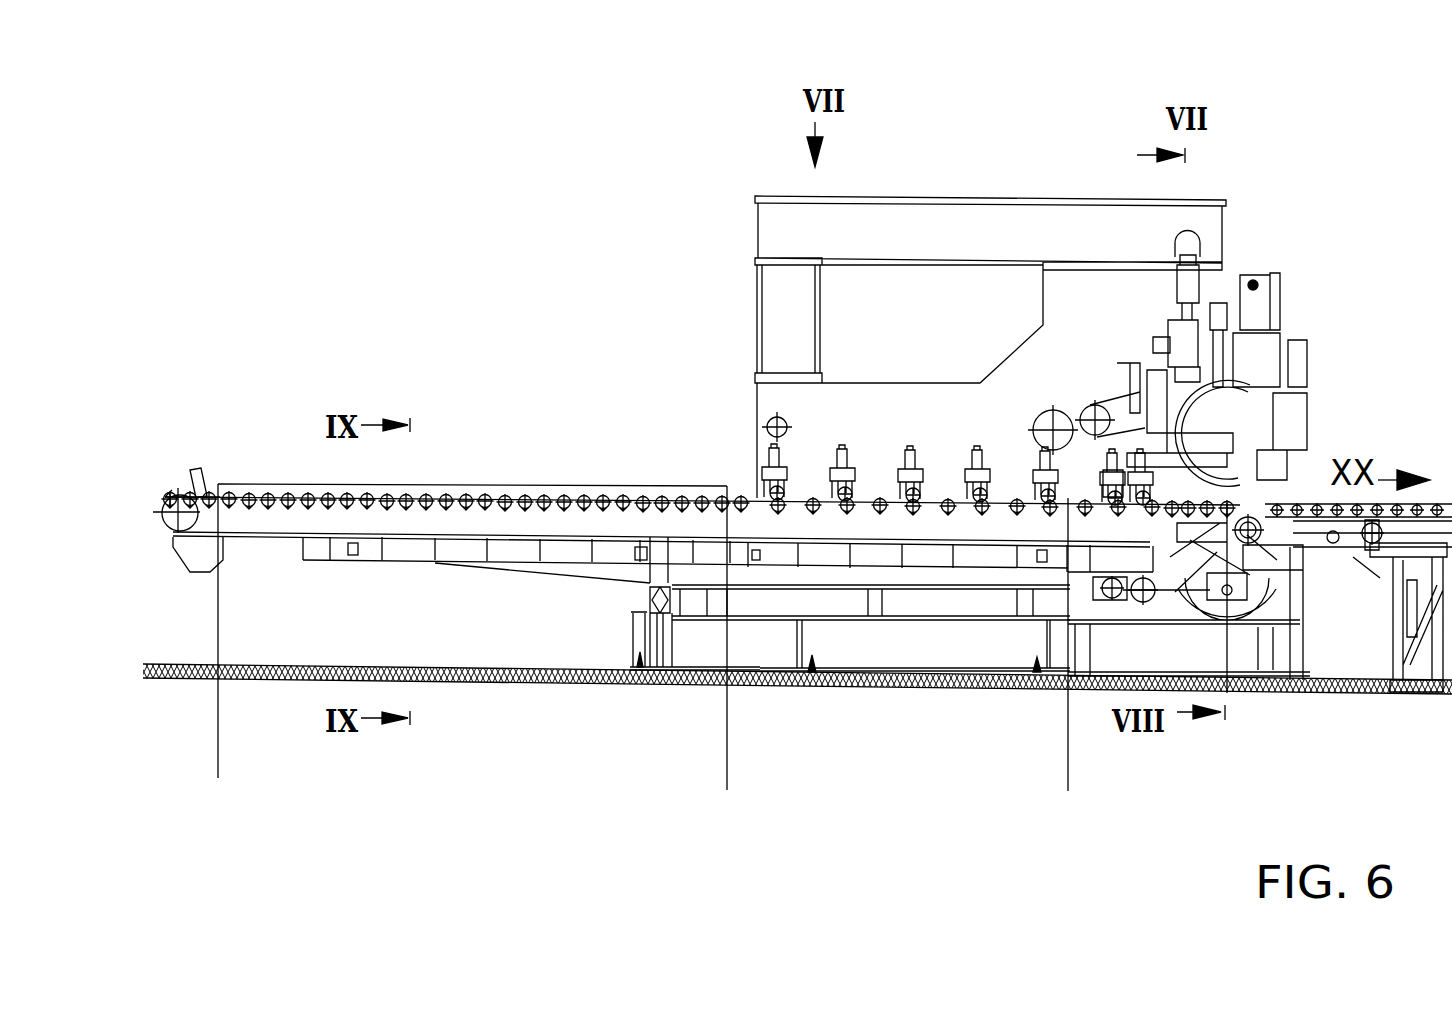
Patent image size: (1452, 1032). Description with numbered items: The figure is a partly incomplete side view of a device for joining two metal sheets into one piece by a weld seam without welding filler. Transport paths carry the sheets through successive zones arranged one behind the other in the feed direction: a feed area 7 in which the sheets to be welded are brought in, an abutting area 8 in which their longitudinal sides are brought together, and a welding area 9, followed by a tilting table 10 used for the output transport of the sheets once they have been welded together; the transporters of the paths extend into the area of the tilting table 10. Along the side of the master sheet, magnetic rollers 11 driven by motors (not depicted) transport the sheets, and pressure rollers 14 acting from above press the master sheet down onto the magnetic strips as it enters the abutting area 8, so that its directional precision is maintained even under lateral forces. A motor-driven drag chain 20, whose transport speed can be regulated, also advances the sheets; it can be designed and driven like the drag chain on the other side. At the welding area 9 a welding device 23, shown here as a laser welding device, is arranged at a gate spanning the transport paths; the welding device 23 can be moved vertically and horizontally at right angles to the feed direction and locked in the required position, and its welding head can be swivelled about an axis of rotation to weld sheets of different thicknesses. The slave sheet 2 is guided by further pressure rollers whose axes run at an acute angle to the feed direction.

The motor-driven drag chain 20 is at (196, 470).
The magnetic rollers 11 is at (250, 495).
The slave sheet 2 is at (701, 460).
The feed area 7 is at (727, 775).
The abutting area 8 is at (1066, 781).
The welding area 9 is at (1322, 798).
The pressure rollers 14 is at (957, 405).
The welding device 23 is at (1267, 350).
The tilting table 10 is at (1385, 688).